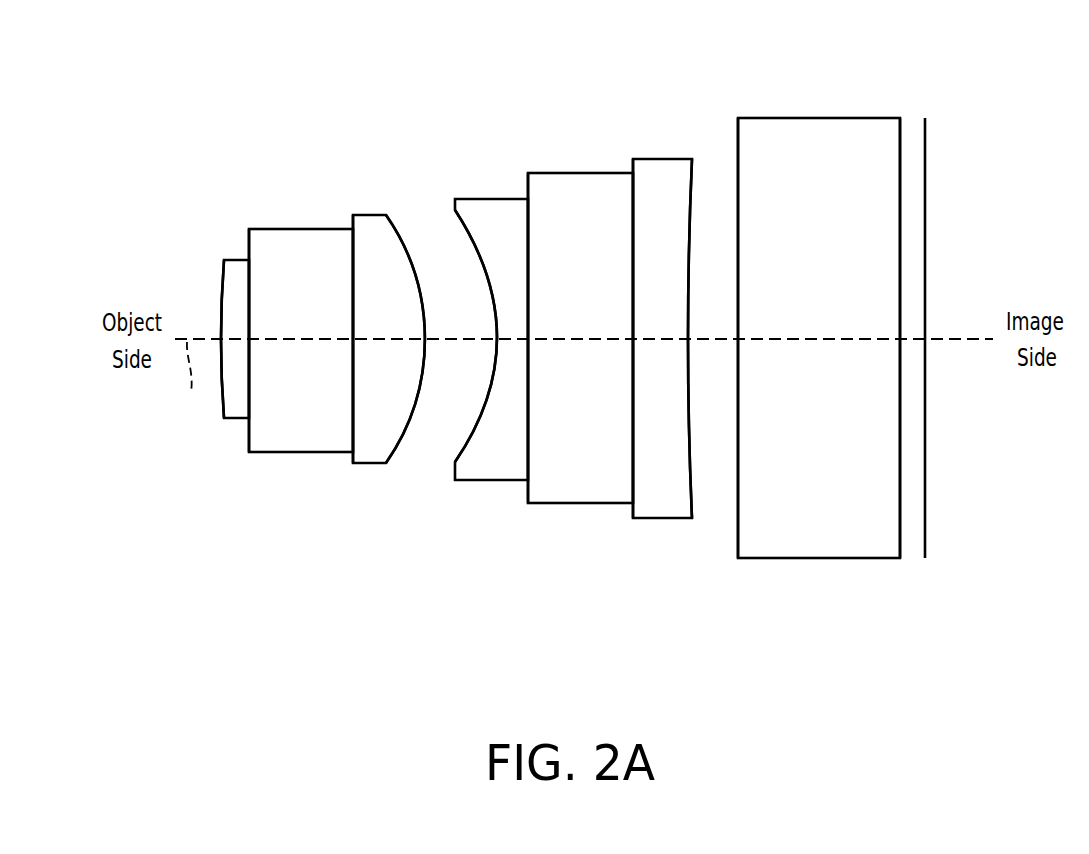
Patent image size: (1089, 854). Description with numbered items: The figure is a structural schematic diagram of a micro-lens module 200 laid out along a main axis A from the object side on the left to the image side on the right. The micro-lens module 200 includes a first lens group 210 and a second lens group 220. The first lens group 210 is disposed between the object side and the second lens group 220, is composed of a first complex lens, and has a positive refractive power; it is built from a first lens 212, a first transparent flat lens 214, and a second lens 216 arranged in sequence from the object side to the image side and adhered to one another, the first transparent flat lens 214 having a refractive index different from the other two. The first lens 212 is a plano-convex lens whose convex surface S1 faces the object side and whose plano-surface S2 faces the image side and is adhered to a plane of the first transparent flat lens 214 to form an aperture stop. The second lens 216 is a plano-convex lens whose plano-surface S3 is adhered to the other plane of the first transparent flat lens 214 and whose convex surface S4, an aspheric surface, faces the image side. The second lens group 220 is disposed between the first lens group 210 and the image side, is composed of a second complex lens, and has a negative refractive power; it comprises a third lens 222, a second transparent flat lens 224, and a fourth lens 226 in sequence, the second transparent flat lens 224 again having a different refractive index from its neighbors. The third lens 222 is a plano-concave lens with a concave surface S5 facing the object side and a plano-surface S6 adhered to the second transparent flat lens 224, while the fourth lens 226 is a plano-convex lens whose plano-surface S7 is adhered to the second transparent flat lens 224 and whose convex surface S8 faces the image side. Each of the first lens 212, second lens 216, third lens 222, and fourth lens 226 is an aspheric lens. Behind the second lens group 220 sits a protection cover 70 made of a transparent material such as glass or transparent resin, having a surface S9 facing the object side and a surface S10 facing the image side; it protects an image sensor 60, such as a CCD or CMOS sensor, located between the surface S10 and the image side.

The micro-lens module 200 is at (592, 360).
The first lens group 210 is at (321, 411).
The first lens 212 is at (232, 419).
The first transparent flat lens 214 is at (298, 453).
The second lens 216 is at (387, 388).
The second lens group 220 is at (573, 398).
The third lens 222 is at (480, 481).
The second transparent flat lens 224 is at (575, 481).
The fourth lens 226 is at (662, 374).
The protection cover 70 is at (820, 559).
The image sensor 60 is at (926, 540).
The main axis A is at (190, 382).
The convex surface S1 is at (223, 280).
The plano-surface S2 is at (252, 252).
The plano-surface S3 is at (350, 253).
The convex surface S4 is at (398, 222).
The concave surface S5 is at (453, 202).
The plano-surface S6 is at (527, 213).
The plano-surface S7 is at (633, 197).
The convex surface S8 is at (691, 187).
The surface S9 is at (738, 142).
The surface S10 is at (900, 127).